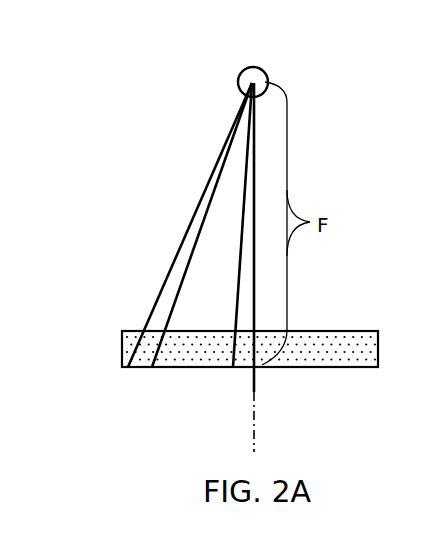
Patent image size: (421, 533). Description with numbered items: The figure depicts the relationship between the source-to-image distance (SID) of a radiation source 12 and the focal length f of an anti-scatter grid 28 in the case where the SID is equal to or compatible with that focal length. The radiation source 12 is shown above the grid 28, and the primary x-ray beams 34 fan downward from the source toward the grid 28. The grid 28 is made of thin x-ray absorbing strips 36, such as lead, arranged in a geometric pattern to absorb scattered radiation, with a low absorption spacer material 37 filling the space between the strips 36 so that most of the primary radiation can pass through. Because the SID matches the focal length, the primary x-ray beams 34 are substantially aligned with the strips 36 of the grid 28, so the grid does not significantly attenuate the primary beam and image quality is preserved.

The primary x-ray beams 34 is at (145, 66).
The radiation source 12 is at (238, 81).
The x-ray absorbing strips 36 is at (233, 368).
The low absorption spacer material 37 is at (353, 344).
The anti-scatter grid 28 is at (333, 368).